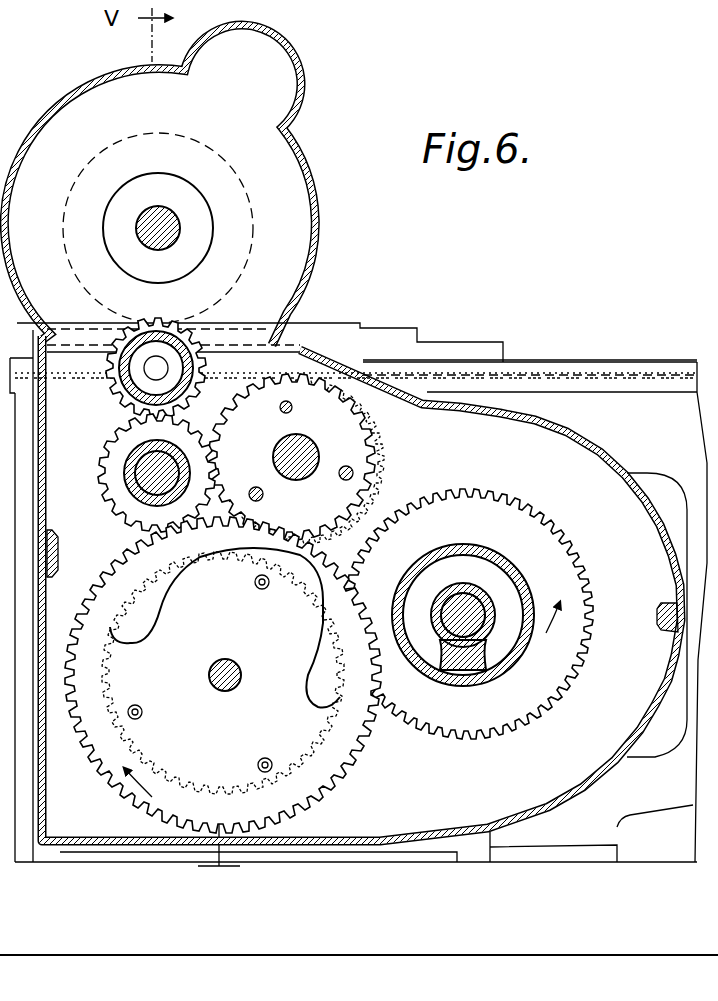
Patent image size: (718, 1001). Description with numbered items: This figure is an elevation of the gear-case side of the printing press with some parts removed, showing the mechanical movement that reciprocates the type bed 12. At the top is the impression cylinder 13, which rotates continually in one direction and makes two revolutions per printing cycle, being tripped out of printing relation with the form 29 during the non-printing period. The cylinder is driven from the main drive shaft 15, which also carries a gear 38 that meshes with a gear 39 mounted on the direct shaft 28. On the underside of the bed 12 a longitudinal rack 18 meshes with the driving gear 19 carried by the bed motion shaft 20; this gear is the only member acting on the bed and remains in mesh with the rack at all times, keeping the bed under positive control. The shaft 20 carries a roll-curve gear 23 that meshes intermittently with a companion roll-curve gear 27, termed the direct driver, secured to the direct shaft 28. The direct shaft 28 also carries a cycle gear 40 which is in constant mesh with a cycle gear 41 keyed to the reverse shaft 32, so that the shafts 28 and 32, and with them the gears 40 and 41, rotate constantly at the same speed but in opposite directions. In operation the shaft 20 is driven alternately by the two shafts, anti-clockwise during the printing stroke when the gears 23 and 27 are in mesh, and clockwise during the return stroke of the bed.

The type bed 12 is at (478, 352).
The impression cylinder 13 is at (253, 246).
The main drive shaft 15 is at (132, 455).
The rack 18 is at (505, 372).
The driving gear 19 is at (383, 458).
The bed motion shaft 20 is at (300, 452).
The roll-curve gear 23 is at (370, 425).
The direct driver roll-curve gear 27 is at (106, 775).
The direct shaft 28 is at (224, 660).
The form 29 is at (333, 325).
The reverse shaft 32 is at (466, 592).
The gear 38 is at (108, 512).
The gear 39 is at (118, 562).
The cycle gear 40 is at (343, 697).
The cycle gear 41 is at (487, 735).